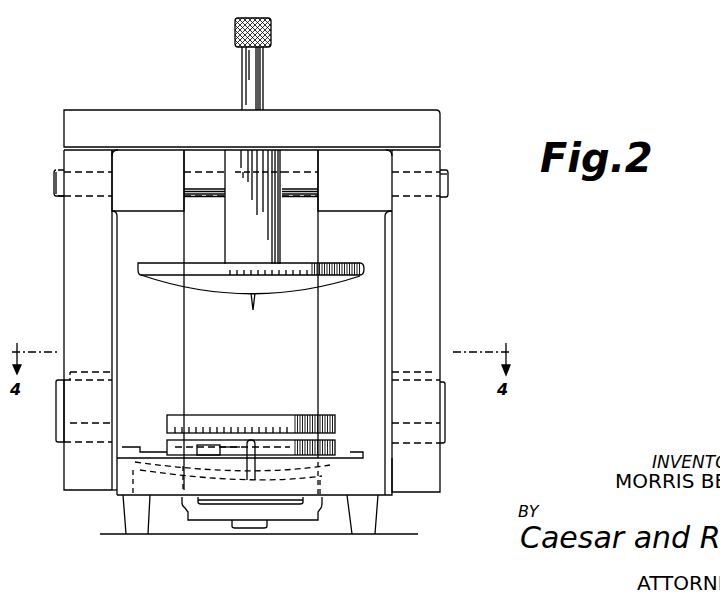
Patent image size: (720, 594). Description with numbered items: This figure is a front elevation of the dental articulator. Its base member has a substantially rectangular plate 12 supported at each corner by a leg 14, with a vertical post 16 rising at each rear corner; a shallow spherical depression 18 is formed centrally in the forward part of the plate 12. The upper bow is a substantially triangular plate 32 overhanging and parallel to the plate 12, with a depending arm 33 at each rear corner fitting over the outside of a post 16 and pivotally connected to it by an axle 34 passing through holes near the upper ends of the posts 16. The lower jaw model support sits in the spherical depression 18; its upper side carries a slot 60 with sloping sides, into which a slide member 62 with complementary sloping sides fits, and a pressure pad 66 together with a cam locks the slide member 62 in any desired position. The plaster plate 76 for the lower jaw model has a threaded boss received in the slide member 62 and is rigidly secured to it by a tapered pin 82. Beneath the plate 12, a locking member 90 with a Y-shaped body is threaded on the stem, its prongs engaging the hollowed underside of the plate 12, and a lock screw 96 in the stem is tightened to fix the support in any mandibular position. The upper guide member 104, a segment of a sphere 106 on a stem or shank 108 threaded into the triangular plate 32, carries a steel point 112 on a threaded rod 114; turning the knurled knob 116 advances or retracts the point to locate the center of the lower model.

The rectangular plate 12 is at (377, 488).
The leg 14 is at (130, 518).
The vertical post 16 is at (125, 247).
The spherical depression 18 is at (318, 470).
The triangular plate 32 is at (320, 117).
The depending arm 33 is at (73, 227).
The axle 34 is at (443, 185).
The slot 60 is at (292, 452).
The slide member 62 is at (224, 446).
The pressure pad 66 is at (203, 446).
The plaster plate 76 is at (334, 423).
The tapered pin 82 is at (248, 462).
The locking member 90 is at (298, 518).
The lock screw 96 is at (243, 528).
The upper guide member 104 is at (214, 236).
The segment of a sphere 106 is at (308, 282).
The stem or shank 108 is at (270, 237).
The steel point 112 is at (250, 300).
The threaded rod 114 is at (248, 73).
The knurled knob 116 is at (236, 30).